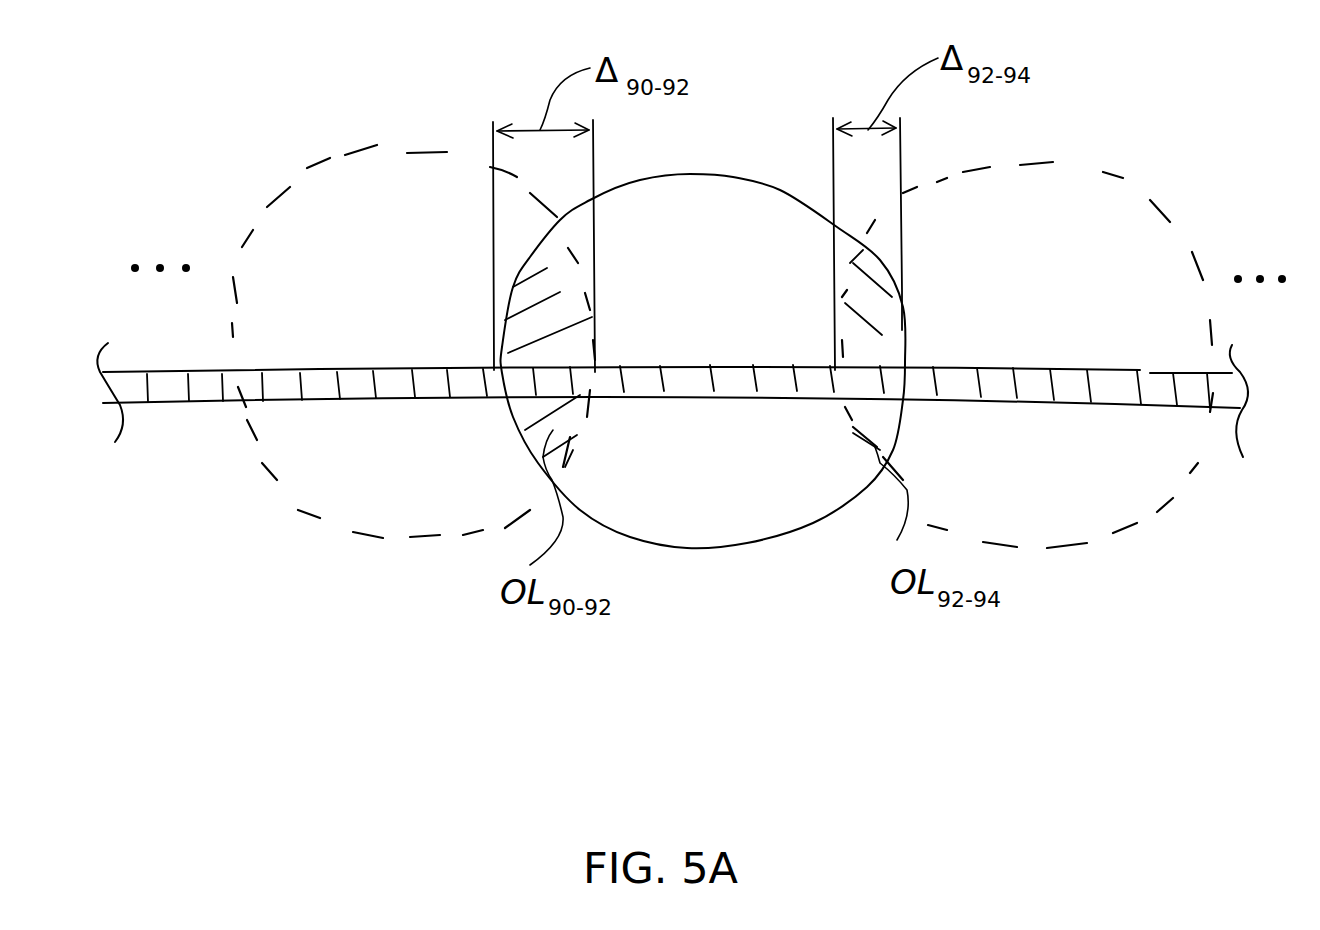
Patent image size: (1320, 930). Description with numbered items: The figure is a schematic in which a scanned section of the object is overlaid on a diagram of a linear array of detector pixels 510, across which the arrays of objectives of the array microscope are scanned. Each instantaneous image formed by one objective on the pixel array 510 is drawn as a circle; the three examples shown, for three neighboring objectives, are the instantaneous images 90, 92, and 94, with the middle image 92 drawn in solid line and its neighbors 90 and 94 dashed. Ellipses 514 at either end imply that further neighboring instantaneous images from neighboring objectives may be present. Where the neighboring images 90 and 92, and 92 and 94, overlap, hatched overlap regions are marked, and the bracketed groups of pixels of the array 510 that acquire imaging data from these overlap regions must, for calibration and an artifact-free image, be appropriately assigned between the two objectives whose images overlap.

The linear array of detector pixels 510 is at (160, 413).
The ellipses 514 is at (155, 253).
The instantaneous image I90 90 is at (413, 290).
The instantaneous image I92 92 is at (703, 304).
The instantaneous image I94 94 is at (1027, 306).